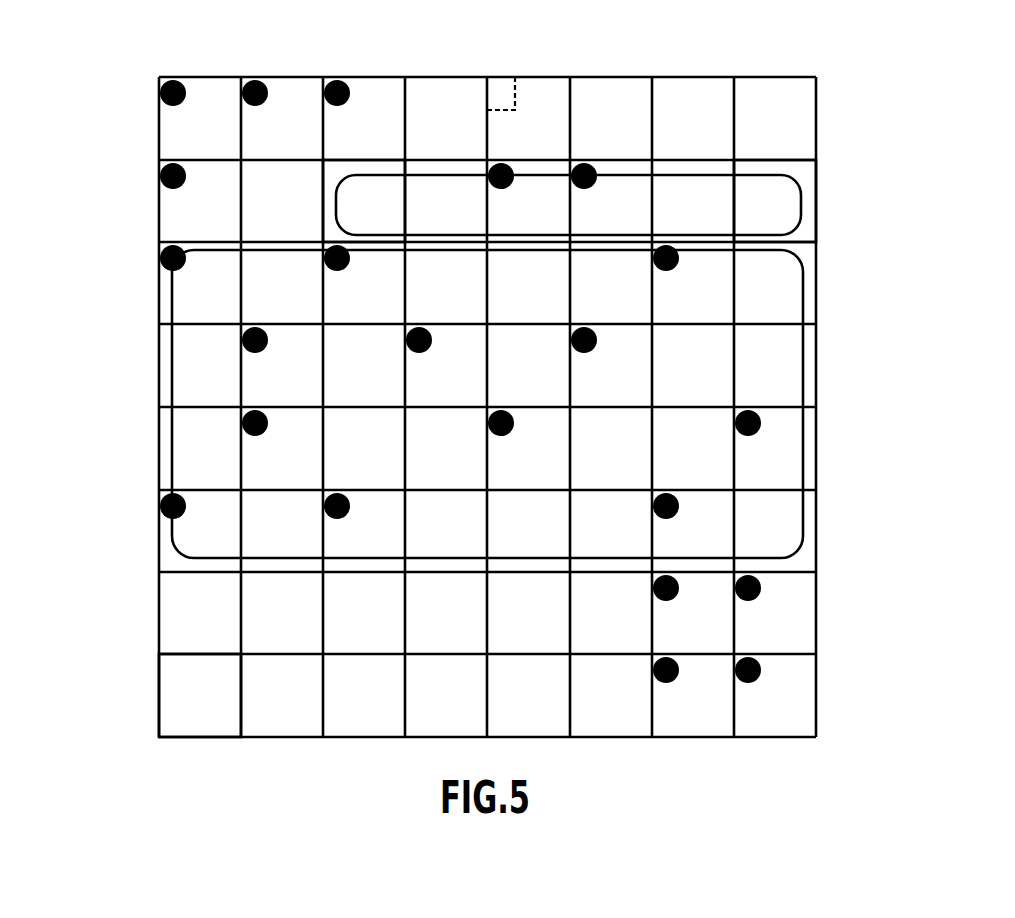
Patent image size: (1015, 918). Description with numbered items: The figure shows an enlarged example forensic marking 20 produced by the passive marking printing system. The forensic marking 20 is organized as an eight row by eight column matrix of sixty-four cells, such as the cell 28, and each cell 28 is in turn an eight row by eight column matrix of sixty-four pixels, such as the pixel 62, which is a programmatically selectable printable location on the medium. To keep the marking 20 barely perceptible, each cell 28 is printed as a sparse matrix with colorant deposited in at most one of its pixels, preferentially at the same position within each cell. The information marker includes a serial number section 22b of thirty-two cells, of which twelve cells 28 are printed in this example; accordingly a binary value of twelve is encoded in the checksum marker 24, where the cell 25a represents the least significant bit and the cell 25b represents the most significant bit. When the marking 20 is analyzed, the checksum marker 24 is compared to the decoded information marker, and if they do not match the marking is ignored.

The forensic marking 20 is at (928, 391).
The checksum marker 24 is at (802, 198).
The cell representing least significant bit of checksum 25a is at (384, 207).
The cell representing most significant bit of checksum 25b is at (773, 220).
The serial number section 22b is at (803, 547).
The pixel 62 is at (500, 95).
The cell 28 is at (182, 704).